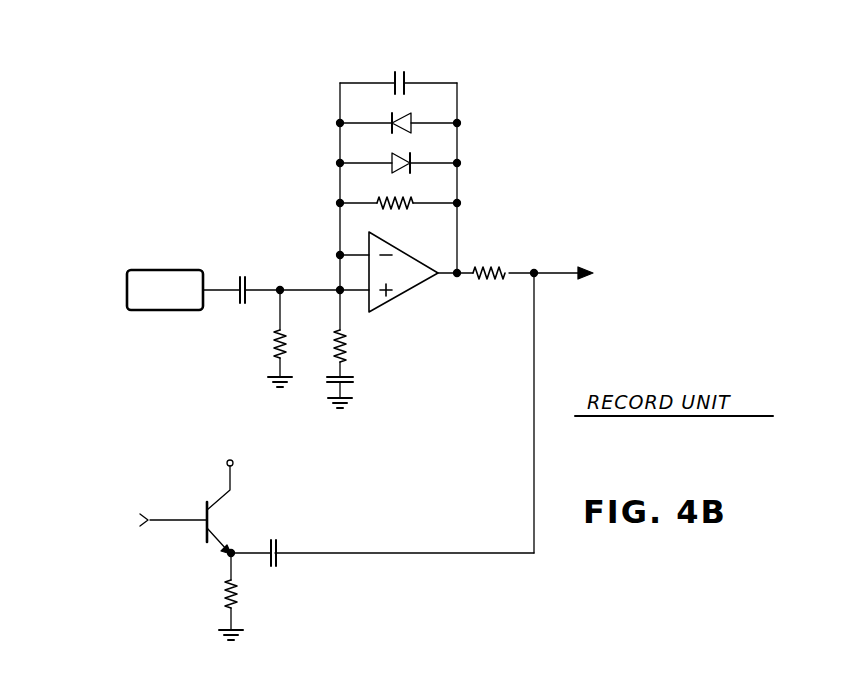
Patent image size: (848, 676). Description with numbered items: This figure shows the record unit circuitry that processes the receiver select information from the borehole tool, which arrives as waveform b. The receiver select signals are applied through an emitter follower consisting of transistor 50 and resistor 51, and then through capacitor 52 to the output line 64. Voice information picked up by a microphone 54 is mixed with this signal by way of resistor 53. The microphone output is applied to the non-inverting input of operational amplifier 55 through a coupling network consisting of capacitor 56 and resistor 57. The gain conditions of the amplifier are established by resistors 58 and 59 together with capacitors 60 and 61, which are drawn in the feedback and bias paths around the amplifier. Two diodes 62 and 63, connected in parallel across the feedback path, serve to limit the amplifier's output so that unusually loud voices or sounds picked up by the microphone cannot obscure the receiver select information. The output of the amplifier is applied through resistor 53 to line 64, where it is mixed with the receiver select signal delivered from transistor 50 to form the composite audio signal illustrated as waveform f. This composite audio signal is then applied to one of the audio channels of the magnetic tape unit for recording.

The transistor 50 is at (212, 524).
The resistor 51 is at (240, 598).
The capacitor 52 is at (285, 545).
The resistor 53 is at (488, 263).
The microphone 54 is at (183, 270).
The operational amplifier 55 is at (412, 295).
The capacitor 56 is at (250, 275).
The resistor 57 is at (272, 343).
The resistor 58 is at (346, 350).
The resistor 59 is at (401, 209).
The capacitor 60 is at (348, 381).
The capacitor 61 is at (406, 70).
The diode 62 is at (401, 159).
The diode 63 is at (401, 119).
The output line 64 is at (537, 339).
The waveform f is at (547, 269).
The waveform b is at (182, 517).